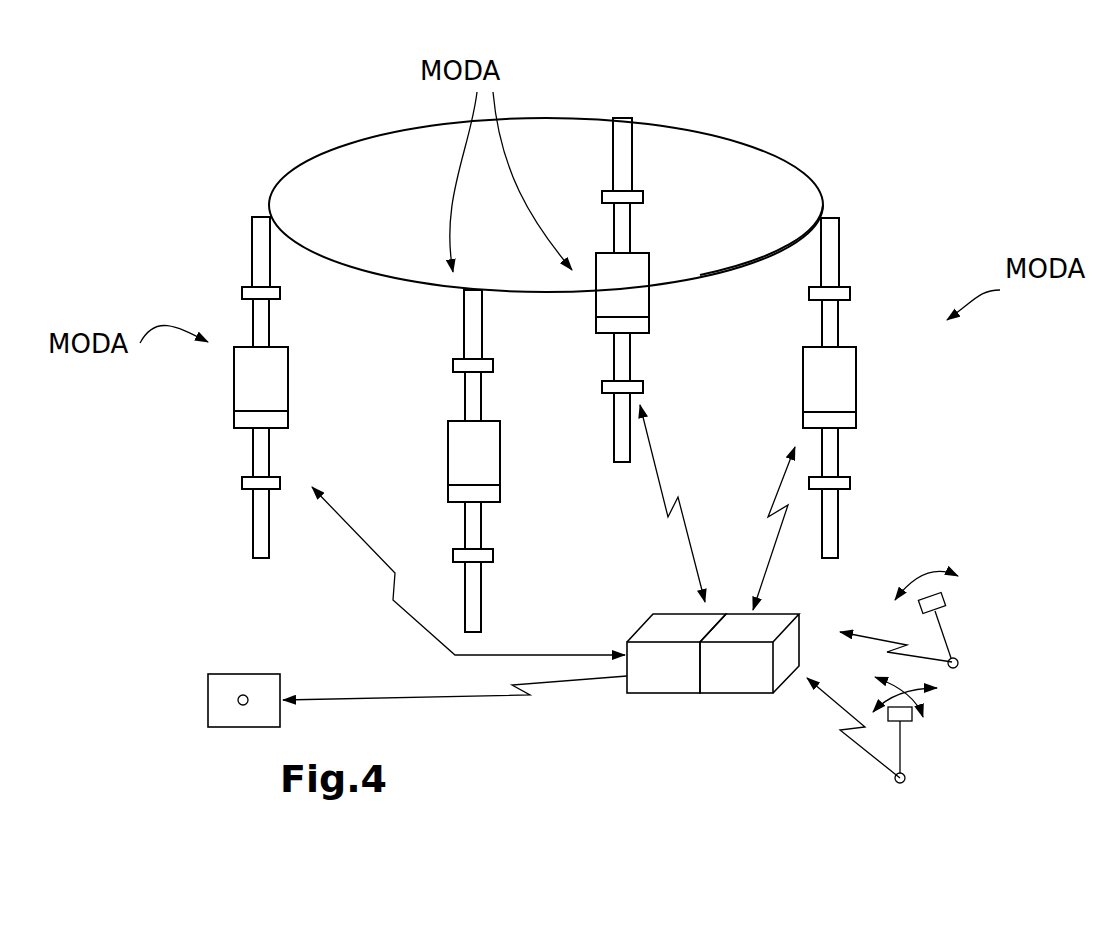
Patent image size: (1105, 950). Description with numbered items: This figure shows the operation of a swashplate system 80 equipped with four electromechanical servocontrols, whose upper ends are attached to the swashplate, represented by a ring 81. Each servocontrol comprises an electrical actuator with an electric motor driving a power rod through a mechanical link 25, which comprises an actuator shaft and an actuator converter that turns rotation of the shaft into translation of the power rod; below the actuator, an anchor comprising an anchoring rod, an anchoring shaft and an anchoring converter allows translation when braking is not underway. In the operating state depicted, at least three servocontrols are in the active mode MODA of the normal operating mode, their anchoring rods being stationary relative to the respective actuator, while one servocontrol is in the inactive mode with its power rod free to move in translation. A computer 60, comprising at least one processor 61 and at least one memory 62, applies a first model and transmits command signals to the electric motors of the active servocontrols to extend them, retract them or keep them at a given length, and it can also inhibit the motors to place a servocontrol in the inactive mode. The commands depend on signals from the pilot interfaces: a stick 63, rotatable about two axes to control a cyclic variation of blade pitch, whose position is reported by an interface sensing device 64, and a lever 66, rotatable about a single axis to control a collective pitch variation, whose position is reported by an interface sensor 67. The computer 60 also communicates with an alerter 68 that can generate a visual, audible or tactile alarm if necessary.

The swashplate system 80 is at (774, 127).
The boundary of illuminated area 81 is at (820, 190).
The mechanical link 25 is at (230, 262).
The computer 60 is at (701, 699).
The processor 61 is at (651, 694).
The memory 62 is at (782, 685).
The stick 63 is at (917, 751).
The interface sensing device 64 is at (903, 781).
The lever 66 is at (956, 640).
The interface sensor 67 is at (958, 665).
The alerter 68 is at (245, 674).